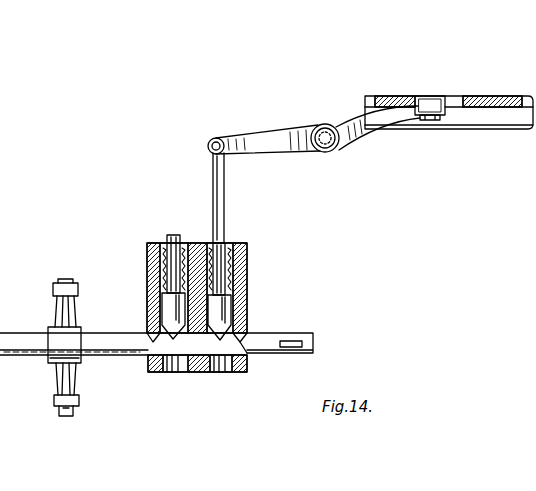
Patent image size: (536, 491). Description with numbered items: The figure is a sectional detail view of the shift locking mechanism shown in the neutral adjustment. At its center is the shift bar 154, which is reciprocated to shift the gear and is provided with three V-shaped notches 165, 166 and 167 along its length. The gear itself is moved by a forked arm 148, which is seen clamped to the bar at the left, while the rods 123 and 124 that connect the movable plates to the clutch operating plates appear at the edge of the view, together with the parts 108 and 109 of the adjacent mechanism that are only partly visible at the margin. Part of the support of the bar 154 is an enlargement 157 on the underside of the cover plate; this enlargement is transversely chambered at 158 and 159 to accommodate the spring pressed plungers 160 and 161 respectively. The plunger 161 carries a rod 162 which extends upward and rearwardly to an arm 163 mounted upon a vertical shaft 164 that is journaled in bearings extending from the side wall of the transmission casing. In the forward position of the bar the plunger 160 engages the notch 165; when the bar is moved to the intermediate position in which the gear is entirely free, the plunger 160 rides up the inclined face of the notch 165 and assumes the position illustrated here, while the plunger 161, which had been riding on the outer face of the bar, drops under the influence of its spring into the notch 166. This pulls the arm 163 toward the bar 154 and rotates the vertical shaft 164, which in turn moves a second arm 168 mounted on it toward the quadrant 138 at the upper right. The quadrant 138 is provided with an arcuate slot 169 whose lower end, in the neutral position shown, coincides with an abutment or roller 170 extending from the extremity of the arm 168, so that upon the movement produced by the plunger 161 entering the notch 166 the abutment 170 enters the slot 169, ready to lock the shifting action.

The rod 124 is at (0, 6).
The adjacent figure element 109 is at (14, 77).
The adjacent figure element 108 is at (14, 189).
The rod 123 is at (3, 262).
The quadrant 138 is at (384, 100).
The forked arm 148 is at (62, 309).
The shift bar 154 is at (94, 334).
The enlargement 157 is at (249, 303).
The chamber 158 is at (178, 364).
The chamber 159 is at (222, 366).
The spring pressed plunger 160 is at (168, 313).
The spring pressed plunger 161 is at (248, 291).
The rod 162 is at (225, 203).
The arm 163 is at (268, 138).
The vertical shaft 164 is at (336, 151).
The V-shaped notch 165 is at (138, 356).
The V-shaped notch 166 is at (240, 345).
The V-shaped notch 167 is at (256, 333).
The arm 168 is at (365, 130).
The arcuate slot 169 is at (456, 98).
The abutment or roller 170 is at (426, 103).